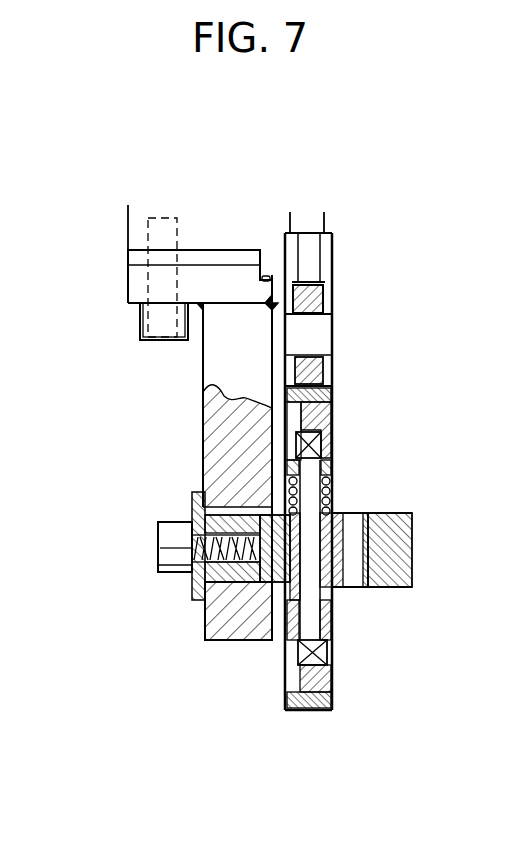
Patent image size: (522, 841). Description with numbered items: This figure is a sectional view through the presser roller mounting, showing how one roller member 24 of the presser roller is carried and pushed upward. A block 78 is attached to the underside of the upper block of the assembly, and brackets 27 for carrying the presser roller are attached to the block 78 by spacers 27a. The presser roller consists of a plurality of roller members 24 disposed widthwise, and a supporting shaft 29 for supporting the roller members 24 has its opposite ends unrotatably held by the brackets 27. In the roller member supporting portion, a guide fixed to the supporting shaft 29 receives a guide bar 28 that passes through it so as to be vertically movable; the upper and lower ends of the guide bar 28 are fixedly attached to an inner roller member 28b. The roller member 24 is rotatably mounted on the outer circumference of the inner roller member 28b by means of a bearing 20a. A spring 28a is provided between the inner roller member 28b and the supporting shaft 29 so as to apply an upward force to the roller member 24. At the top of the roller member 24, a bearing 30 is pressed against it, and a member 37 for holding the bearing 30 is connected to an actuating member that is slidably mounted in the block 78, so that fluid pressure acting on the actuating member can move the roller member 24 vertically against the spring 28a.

The block 78 is at (125, 233).
The spacers 27a is at (137, 258).
The bracket 27 is at (202, 422).
The member for holding the bearing 37 is at (323, 252).
The bearing 30 is at (330, 380).
The bearing 20a is at (333, 442).
The inner roller member 28b is at (330, 458).
The spring 28a is at (338, 492).
The guide bar 28 is at (307, 603).
The supporting shaft 29 is at (393, 577).
The roller member 24 is at (326, 712).